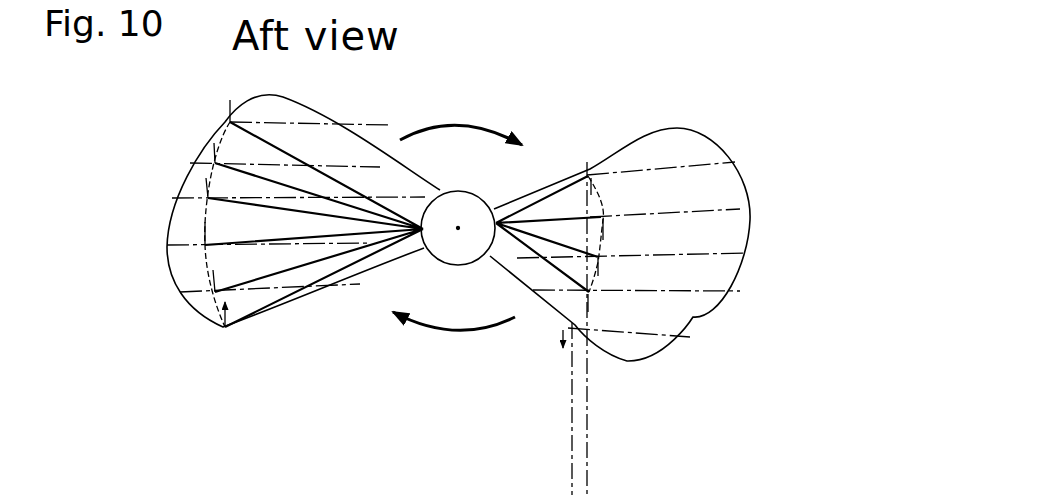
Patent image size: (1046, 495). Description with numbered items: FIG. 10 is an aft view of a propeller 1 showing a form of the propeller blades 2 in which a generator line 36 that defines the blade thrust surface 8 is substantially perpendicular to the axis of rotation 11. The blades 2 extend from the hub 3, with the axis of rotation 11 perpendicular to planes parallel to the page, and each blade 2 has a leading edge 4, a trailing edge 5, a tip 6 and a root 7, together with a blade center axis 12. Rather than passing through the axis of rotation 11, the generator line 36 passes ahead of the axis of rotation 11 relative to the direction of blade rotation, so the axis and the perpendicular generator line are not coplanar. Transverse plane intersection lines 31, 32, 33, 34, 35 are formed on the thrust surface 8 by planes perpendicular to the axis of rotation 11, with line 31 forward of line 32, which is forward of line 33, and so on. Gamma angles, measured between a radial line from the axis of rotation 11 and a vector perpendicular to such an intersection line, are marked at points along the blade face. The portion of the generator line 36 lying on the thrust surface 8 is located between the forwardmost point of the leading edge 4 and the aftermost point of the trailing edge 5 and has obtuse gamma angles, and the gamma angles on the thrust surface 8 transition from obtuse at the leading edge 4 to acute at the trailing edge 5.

The propeller 1 is at (405, 115).
The blade 2 is at (548, 160).
The hub 3 is at (458, 269).
The leading edge 4 is at (641, 366).
The trailing edge 5 is at (652, 122).
The tip 6 is at (753, 188).
The root 7 is at (489, 268).
The thrust surface 8 is at (728, 227).
The axis of rotation 11 is at (455, 232).
The blade center axis 12 is at (627, 244).
The transverse plane intersection line 31 is at (675, 320).
The transverse plane intersection line 32 is at (703, 274).
The transverse plane intersection line 33 is at (712, 237).
The transverse plane intersection line 34 is at (783, 151).
The transverse plane intersection line 35 is at (707, 165).
The generator line 36 is at (172, 195).